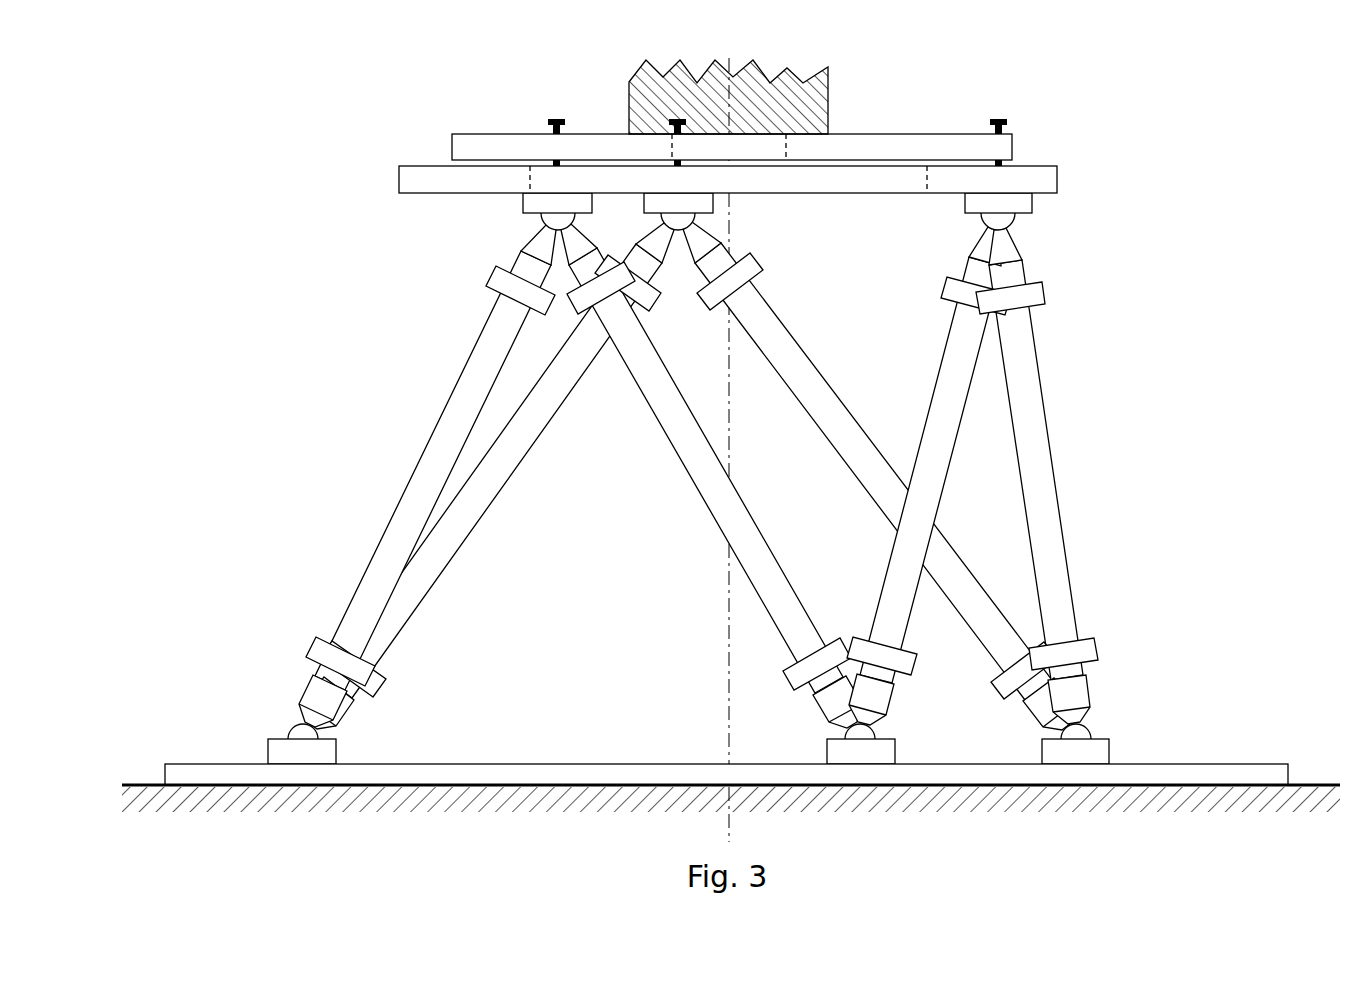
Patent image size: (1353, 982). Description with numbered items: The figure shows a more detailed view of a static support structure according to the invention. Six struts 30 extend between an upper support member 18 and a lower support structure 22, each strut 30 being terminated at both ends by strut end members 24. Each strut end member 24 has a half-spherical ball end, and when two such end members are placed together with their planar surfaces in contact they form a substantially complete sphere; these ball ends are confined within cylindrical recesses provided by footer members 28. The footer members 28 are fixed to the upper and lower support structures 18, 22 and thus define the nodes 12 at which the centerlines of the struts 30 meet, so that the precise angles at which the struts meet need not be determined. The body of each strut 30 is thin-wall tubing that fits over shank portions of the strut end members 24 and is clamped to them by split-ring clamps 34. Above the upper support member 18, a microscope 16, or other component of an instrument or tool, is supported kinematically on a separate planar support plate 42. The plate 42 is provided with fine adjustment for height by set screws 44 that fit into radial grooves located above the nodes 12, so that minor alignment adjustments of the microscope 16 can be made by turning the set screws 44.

The nodes 12 is at (528, 218).
The microscope 16 is at (828, 100).
The upper support member 18 is at (1061, 178).
The lower support structure 22 is at (1158, 763).
The strut end member 24 is at (520, 249).
The footer member 28 is at (1036, 204).
The strut 30 is at (412, 462).
The split-ring clamp 34 is at (488, 283).
The planar support plate 42 is at (1016, 145).
The set screw 44 is at (1011, 122).